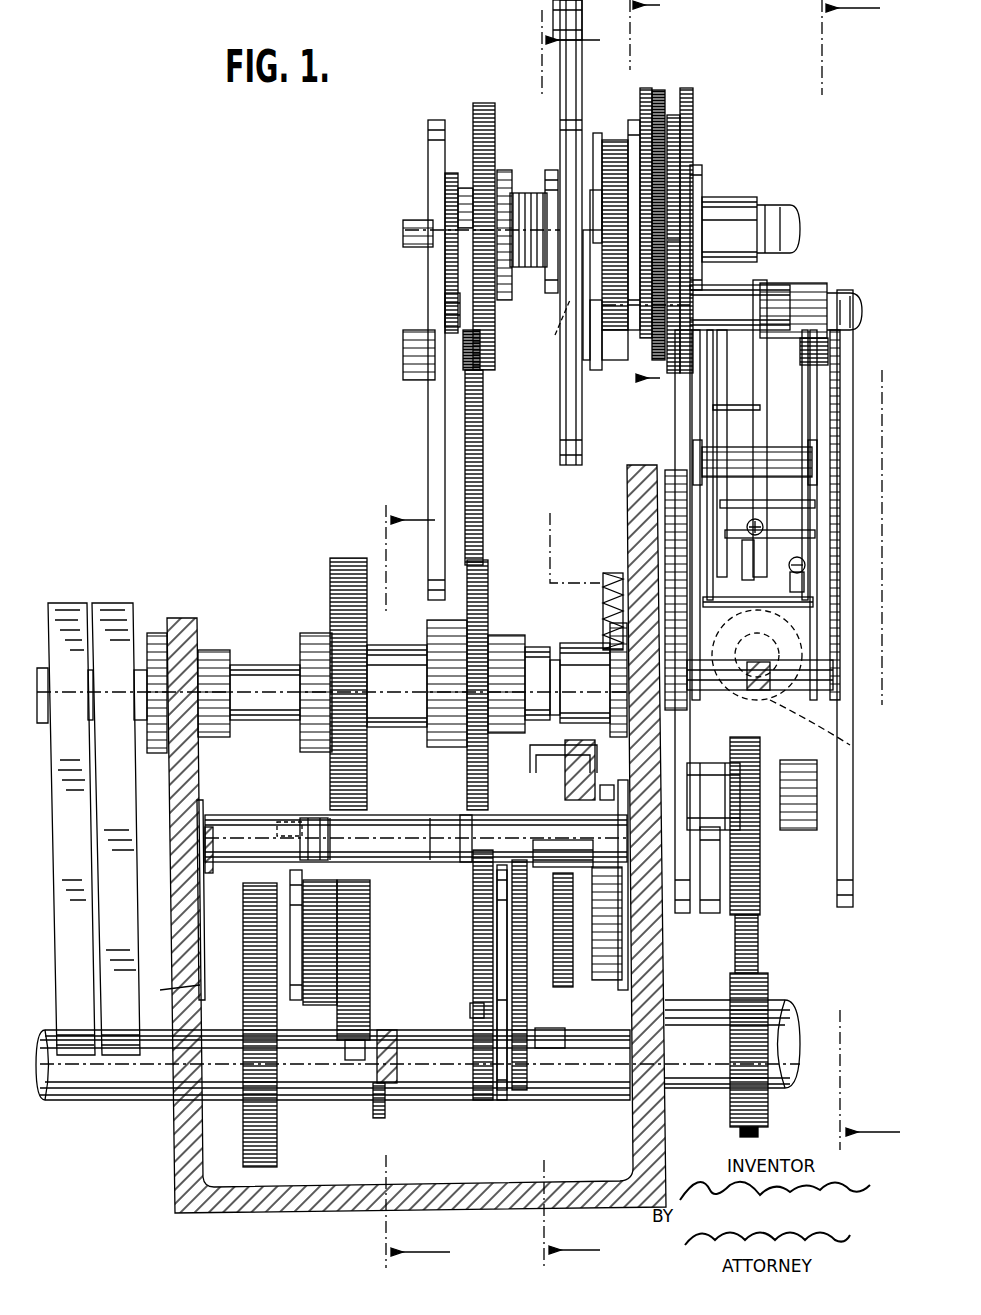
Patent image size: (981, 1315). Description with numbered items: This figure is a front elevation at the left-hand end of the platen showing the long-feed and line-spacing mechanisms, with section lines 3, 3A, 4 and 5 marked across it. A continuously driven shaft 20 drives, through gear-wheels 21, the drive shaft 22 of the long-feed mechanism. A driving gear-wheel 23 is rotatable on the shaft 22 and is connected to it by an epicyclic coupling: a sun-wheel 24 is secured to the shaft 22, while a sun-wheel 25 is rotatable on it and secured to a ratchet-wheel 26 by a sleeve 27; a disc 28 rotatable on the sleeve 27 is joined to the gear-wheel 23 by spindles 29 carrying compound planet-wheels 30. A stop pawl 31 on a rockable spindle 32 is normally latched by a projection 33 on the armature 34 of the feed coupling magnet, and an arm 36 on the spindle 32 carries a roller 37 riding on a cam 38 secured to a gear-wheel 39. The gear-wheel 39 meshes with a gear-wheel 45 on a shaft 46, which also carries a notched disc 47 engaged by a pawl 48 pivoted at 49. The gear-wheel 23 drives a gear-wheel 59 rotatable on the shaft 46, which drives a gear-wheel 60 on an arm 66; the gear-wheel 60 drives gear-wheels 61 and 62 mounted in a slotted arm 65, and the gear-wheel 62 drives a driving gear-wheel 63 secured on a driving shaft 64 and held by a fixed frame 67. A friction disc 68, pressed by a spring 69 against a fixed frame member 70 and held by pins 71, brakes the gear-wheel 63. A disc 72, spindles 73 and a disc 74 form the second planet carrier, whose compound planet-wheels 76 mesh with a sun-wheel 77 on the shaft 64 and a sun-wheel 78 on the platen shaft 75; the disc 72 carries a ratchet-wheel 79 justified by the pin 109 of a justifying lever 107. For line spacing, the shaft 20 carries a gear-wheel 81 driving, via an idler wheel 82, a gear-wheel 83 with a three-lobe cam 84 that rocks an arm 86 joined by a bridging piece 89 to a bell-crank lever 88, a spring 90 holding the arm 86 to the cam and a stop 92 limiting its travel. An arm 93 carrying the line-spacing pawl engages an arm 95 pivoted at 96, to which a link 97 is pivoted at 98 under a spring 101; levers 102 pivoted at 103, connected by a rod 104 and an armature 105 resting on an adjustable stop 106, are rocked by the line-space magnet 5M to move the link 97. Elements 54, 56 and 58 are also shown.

The section line 3- 3 is at (822, 574).
The section line 3A- 3A is at (618, 195).
The section line 4- 4 is at (531, 646).
The section line 5- 5 is at (379, 887).
The shaft 20 is at (790, 1010).
The gear-wheels 21 is at (243, 990).
The drive shaft 22 is at (170, 992).
The driving gear-wheel 23 is at (497, 970).
The sun-wheel 24 is at (473, 918).
The sun-wheel 25 is at (573, 920).
The ratchet-wheel 26 is at (585, 860).
The sleeve 27 is at (590, 985).
The disc 28 is at (565, 1040).
The spindles 29 is at (464, 825).
The compound planet-wheels 30 is at (505, 815).
The stop pawl 31 is at (565, 780).
The rockable spindle 32 is at (405, 815).
The projection 33 is at (607, 779).
The armature 34 is at (530, 760).
The arm 36 is at (312, 818).
The roller 37 is at (285, 822).
The cam 38 is at (300, 950).
The gear-wheel 39 is at (345, 1005).
The gear-wheel 45 is at (343, 558).
The shaft 46 is at (262, 665).
The disc 47 is at (612, 668).
The pawl 48 is at (603, 620).
The pivot 49 is at (395, 1095).
The clutch element 54 is at (212, 830).
The plate 56 is at (199, 905).
The hub 58 is at (300, 730).
The gear-wheel 59 is at (488, 585).
The gear-wheel 60 is at (483, 470).
The gear-wheel 61 is at (445, 298).
The gear-wheel 62 is at (482, 372).
The driving gear-wheel 63 is at (480, 103).
The driving shaft 64 is at (410, 222).
The arm 65 is at (445, 255).
The arm 66 is at (428, 486).
The fixed frame 67 is at (418, 315).
The friction disc 68 is at (505, 300).
The spring 69 is at (528, 193).
The fixed frame member 70 is at (560, 427).
The pins 71 is at (550, 170).
The disc 72 is at (645, 88).
The spindles 73 is at (685, 135).
The disc 74 is at (693, 92).
The platen shaft 75 is at (757, 205).
The compound planet-wheels 76 is at (660, 110).
The sun-wheel 77 is at (702, 195).
The sun-wheel 78 is at (683, 210).
The ratchet-wheel 79 is at (630, 125).
The gear-wheel 81 is at (768, 990).
The idler wheel 82 is at (758, 950).
The gear-wheel 83 is at (760, 885).
The three-lobe cam 84 is at (712, 913).
The arm 86 is at (700, 395).
The bell-crank lever 88 is at (795, 392).
The bridging piece 89 is at (742, 560).
The spring 90 is at (795, 578).
The stop 92 is at (730, 447).
The arm 93 is at (596, 195).
The arm 95 is at (596, 370).
The pivot 96 is at (555, 335).
The link 97 is at (745, 390).
The pivot 98 is at (858, 295).
The spring 101 is at (770, 525).
The levers 102 is at (693, 462).
The pivot 103 is at (765, 800).
The rod 104 is at (782, 450).
The armature 105 is at (813, 605).
The adjustable stop 106 is at (760, 662).
The justifying lever 107 is at (596, 135).
The pin 109 is at (628, 140).
The motor 5M is at (828, 728).